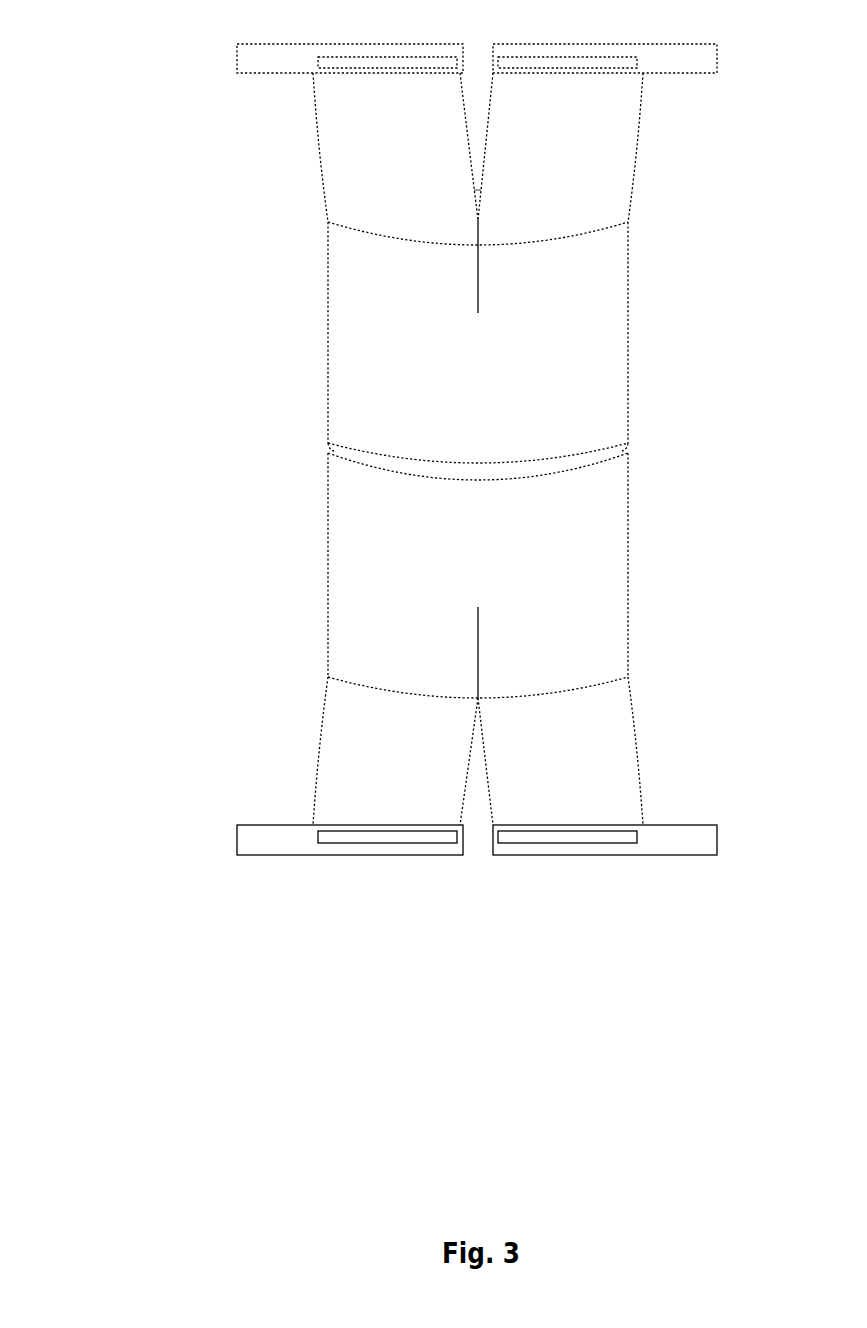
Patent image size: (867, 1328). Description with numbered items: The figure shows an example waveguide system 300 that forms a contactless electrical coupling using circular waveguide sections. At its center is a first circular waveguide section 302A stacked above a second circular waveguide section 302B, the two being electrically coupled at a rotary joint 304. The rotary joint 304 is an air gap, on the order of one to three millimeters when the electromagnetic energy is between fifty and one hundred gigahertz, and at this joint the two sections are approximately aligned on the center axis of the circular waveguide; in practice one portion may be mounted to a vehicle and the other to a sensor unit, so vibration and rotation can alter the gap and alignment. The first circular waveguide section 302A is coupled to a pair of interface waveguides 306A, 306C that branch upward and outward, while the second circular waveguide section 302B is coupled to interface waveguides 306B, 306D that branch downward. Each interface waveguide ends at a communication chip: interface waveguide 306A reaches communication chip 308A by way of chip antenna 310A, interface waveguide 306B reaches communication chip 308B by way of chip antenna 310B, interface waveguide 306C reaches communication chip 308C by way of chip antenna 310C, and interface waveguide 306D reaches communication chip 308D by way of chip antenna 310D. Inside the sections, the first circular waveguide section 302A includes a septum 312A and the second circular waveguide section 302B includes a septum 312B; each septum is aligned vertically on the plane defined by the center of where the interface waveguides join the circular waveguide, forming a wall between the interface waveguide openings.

The waveguide system 300 is at (66, 164).
The first circular waveguide section 302A is at (630, 345).
The second circular waveguide section 302B is at (630, 583).
The rotary joint 304 is at (634, 449).
The interface waveguide 306A is at (632, 182).
The interface waveguide 306B is at (636, 760).
The interface waveguide 306C is at (323, 180).
The interface waveguide 306D is at (320, 765).
The communication chip 308A is at (665, 44).
The communication chip 308B is at (663, 855).
The communication chip 308C is at (268, 44).
The communication chip 308D is at (268, 855).
The chip antenna 310A is at (530, 57).
The chip antenna 310B is at (522, 843).
The chip antenna 310C is at (432, 57).
The chip antenna 310D is at (425, 843).
The septum 312A is at (488, 294).
The septum 312B is at (488, 649).